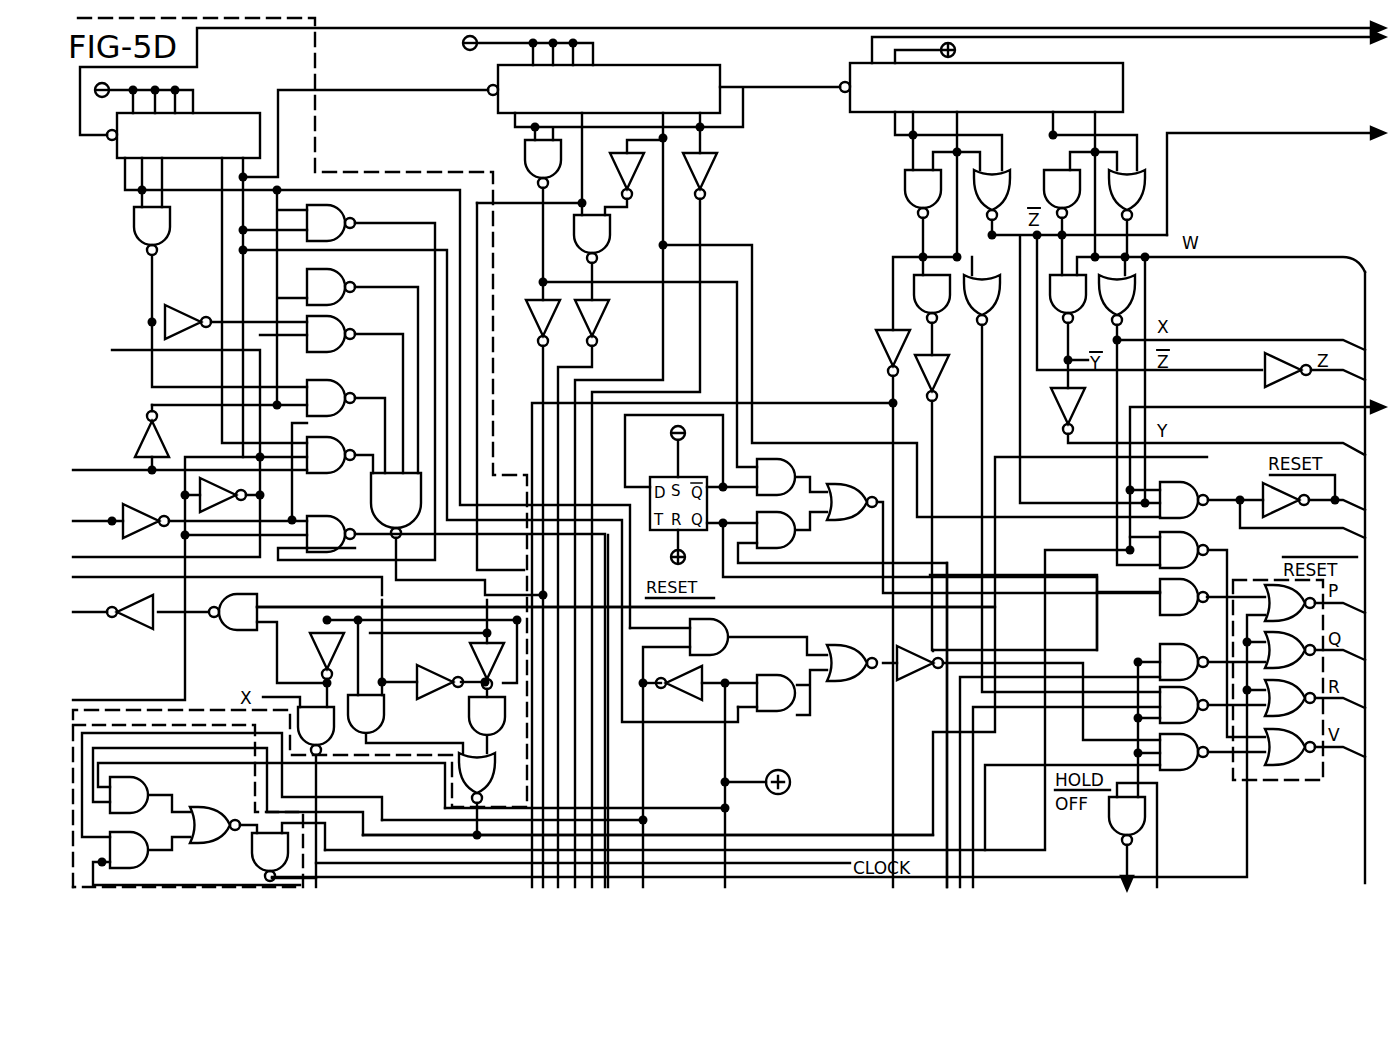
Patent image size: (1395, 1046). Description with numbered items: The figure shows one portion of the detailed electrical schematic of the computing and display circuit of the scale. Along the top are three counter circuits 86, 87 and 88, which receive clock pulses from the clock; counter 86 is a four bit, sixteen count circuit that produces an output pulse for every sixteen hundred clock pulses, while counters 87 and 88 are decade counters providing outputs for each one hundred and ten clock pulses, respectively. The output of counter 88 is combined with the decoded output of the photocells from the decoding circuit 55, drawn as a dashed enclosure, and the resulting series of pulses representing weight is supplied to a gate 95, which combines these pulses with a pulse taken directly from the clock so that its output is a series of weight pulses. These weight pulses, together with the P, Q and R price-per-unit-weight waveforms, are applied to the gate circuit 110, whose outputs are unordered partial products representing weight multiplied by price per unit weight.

The decoding circuit 55 is at (318, 42).
The counter circuit 86 is at (1002, 102).
The counter circuit 87 is at (625, 104).
The counter circuit 88 is at (202, 152).
The gate 95 is at (258, 769).
The gate circuit 110 is at (1323, 782).